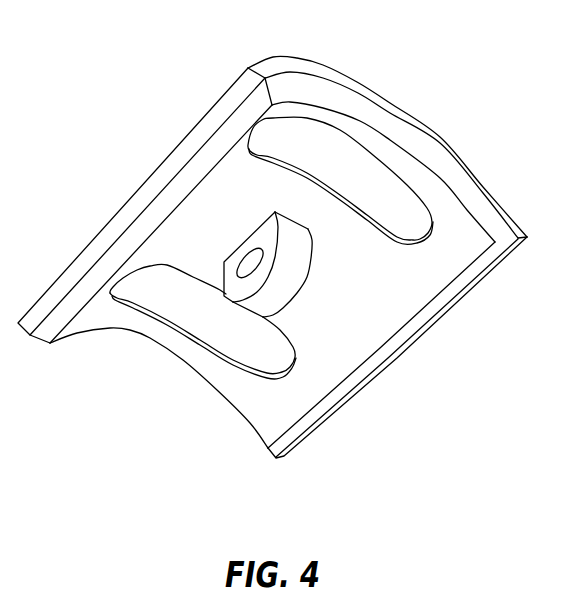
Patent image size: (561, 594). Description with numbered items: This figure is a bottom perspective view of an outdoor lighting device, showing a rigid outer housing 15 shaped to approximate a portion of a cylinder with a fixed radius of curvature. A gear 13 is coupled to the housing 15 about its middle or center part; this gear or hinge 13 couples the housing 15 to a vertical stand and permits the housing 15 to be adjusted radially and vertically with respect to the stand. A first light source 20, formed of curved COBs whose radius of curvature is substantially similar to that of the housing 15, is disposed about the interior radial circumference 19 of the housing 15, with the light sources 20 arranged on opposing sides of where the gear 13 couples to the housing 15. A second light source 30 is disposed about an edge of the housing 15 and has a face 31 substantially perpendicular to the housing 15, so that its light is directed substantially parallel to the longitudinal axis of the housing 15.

The gear 13 is at (265, 240).
The housing 15 is at (375, 378).
The interior radial circumference 19 is at (382, 287).
The first light source 20 is at (360, 160).
The second light source 30 is at (223, 108).
The face 31 is at (468, 190).